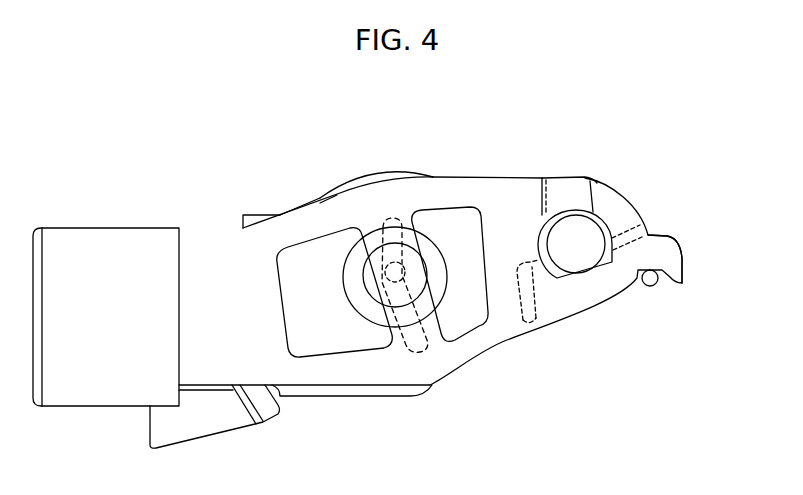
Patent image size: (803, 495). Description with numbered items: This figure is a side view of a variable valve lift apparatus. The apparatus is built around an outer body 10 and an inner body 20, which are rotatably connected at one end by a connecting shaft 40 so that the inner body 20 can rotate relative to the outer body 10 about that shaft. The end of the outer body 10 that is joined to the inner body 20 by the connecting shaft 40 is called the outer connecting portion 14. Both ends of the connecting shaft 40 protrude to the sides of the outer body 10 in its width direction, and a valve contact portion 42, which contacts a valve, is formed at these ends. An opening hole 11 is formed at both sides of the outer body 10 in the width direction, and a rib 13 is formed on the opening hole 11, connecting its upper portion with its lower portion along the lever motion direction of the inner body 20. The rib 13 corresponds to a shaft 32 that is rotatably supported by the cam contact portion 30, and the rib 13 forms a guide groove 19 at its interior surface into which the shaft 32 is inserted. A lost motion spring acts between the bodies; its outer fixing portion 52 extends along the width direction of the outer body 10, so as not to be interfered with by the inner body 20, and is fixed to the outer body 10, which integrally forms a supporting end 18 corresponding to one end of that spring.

The outer body 10 is at (502, 178).
The opening hole 11 is at (352, 346).
The rib 13 is at (446, 338).
The outer connecting portion 14 is at (568, 190).
The supporting end 18 is at (675, 268).
The guide groove 19 is at (405, 356).
The inner body 20 is at (296, 253).
The cam contact portion 30 is at (350, 178).
The shaft 32 is at (402, 270).
The connecting shaft 40 is at (595, 237).
The valve contact portion 42 is at (588, 277).
The outer fixing portion 52 is at (650, 286).